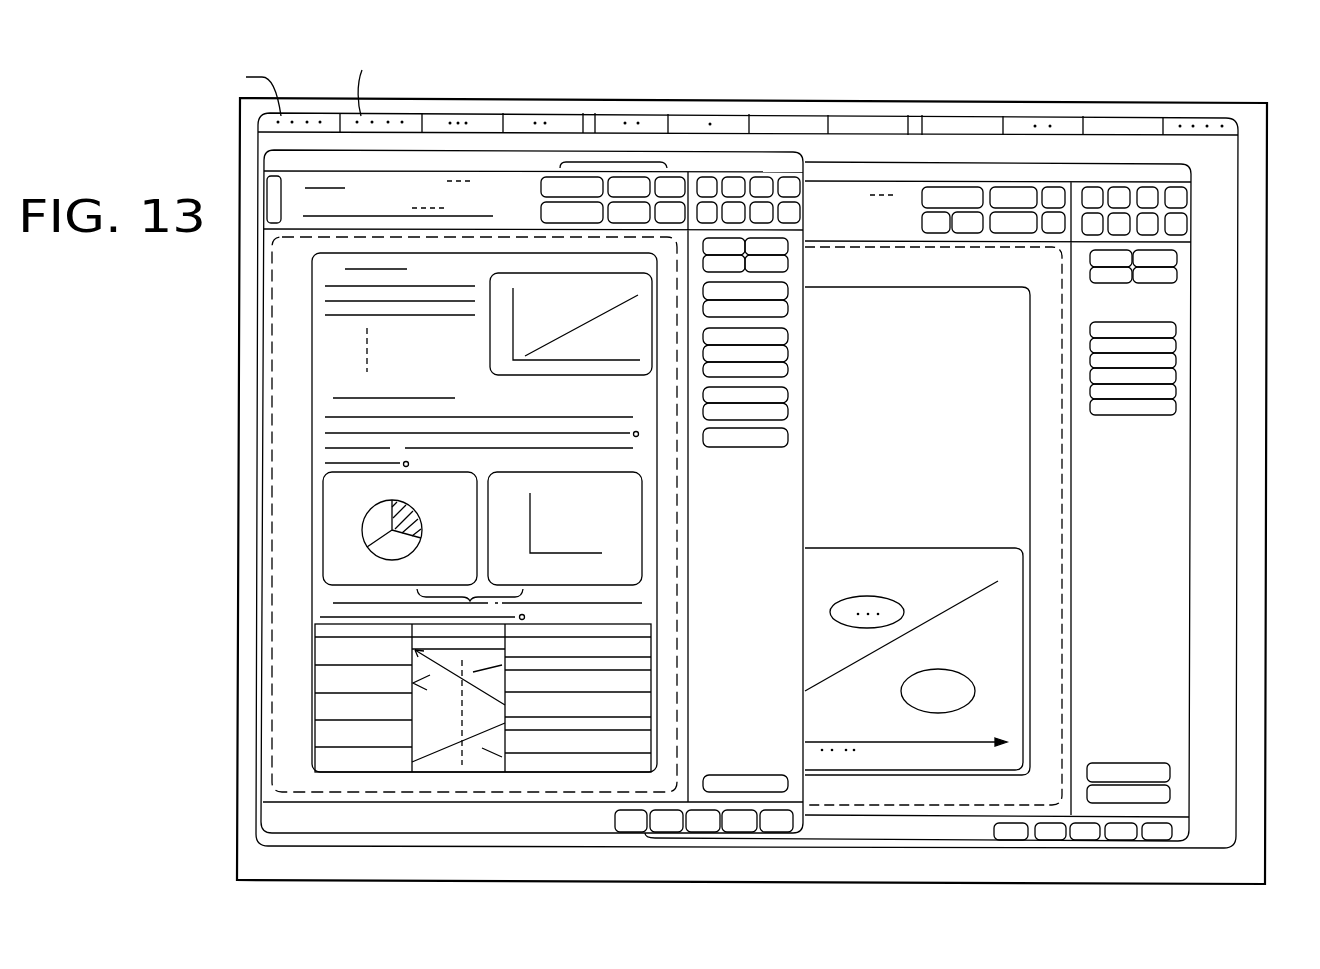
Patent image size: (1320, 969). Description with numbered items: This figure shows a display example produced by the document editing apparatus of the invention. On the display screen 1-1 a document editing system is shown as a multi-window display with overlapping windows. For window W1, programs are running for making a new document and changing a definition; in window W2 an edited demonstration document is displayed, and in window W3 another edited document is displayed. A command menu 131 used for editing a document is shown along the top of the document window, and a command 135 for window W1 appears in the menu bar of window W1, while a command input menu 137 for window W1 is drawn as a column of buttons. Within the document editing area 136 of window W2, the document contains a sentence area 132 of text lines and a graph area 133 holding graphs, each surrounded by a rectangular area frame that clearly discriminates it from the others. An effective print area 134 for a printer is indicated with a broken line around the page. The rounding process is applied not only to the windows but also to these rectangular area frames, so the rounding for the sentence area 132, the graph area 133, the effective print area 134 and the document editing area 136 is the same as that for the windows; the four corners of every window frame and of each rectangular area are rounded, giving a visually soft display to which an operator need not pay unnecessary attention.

The display screen 1-1 is at (1267, 350).
The window W1 is at (1237, 473).
The window W2 is at (803, 507).
The window W3 is at (1189, 665).
The command menu 131 is at (598, 160).
The sentence area 132 is at (350, 450).
The graph area 133 is at (468, 597).
The effective print area 134 is at (272, 385).
The command for window W1 135 is at (474, 116).
The document editing area 136 is at (577, 780).
The command input menu 137 is at (777, 733).